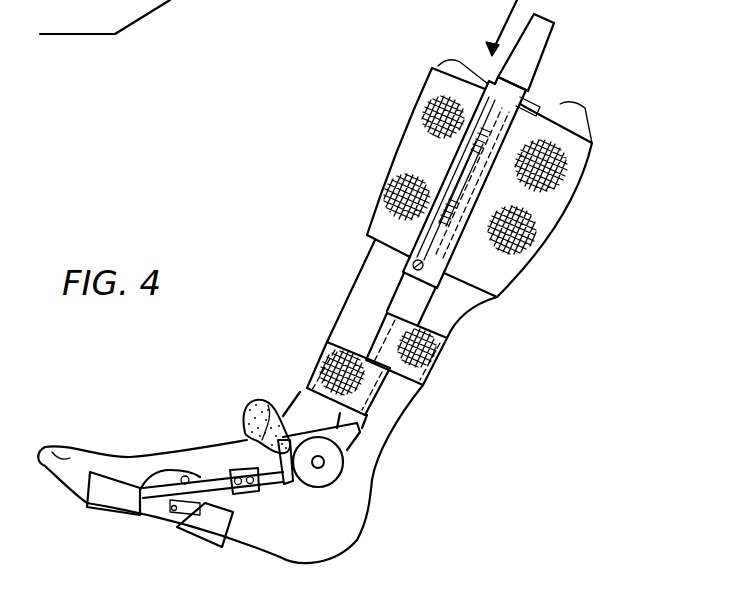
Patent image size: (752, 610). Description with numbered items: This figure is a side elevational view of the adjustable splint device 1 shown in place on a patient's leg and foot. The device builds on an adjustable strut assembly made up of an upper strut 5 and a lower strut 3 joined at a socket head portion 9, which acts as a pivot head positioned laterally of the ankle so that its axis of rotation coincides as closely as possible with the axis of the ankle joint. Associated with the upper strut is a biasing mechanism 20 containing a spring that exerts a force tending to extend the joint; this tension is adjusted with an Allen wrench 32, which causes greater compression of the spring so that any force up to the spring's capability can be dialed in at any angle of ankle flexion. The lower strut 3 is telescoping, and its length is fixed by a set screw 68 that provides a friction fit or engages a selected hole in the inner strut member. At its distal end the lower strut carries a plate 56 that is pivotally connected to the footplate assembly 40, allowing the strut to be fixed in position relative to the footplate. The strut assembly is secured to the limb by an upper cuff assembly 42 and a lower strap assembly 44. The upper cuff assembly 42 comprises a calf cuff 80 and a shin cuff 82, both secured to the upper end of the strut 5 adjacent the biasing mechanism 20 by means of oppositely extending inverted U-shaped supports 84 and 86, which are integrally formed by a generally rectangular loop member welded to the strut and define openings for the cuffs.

The ankle foot orthosis 1 is at (335, 187).
The lower strut 3 is at (270, 490).
The upper strut 5 is at (417, 305).
The socket head portion 9 is at (323, 477).
The biasing mechanism 20 is at (466, 246).
The Allen wrench 32 is at (540, 42).
The footplate assembly 40 is at (174, 539).
The upper cuff assembly 42 is at (552, 191).
The lower strap assembly 44 is at (449, 368).
The plate 56 is at (168, 478).
The set screw 68 is at (231, 470).
The calf cuff 80 is at (495, 210).
The shin cuff 82 is at (417, 123).
The inverted U-shaped support 84 is at (537, 110).
The inverted U-shaped support 86 is at (483, 80).